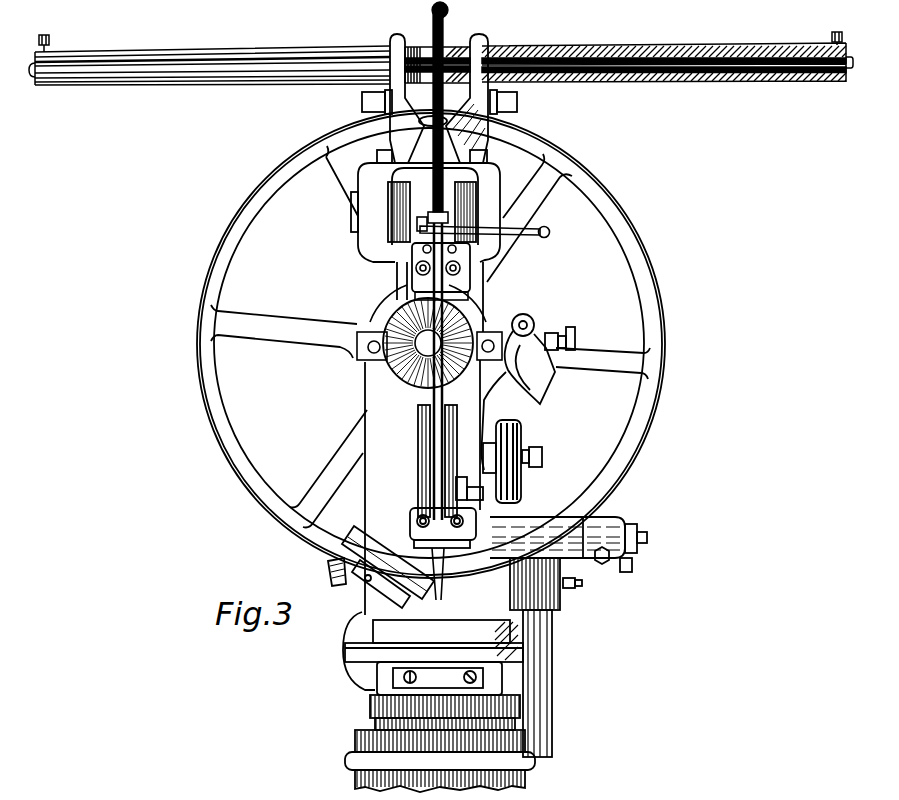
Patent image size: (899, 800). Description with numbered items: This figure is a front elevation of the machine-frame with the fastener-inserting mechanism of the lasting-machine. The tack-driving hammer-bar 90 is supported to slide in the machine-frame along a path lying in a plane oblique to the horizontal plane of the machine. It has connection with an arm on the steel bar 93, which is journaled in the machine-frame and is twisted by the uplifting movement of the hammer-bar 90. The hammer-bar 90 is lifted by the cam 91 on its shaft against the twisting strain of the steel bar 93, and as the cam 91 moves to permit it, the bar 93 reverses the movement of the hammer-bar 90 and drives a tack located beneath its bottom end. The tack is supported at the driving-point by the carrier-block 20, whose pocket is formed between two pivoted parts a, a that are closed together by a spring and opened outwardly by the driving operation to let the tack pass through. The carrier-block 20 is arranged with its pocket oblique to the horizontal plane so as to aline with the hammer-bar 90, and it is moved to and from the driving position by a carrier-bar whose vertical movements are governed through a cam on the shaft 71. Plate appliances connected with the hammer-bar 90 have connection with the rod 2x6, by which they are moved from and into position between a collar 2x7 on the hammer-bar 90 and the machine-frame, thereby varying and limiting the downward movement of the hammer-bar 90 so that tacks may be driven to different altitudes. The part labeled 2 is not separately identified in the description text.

The steel bar 93 is at (575, 88).
The rod 2x6 is at (500, 238).
The collar 2x7 is at (398, 260).
The cam 91 is at (363, 372).
The tack-driving hammer-bar 90 is at (433, 393).
The clamp and horizontal shaft housing 2 is at (558, 628).
The shaft 71 is at (552, 655).
The pivoted parts a is at (343, 650).
The carrier-block 20 is at (390, 667).